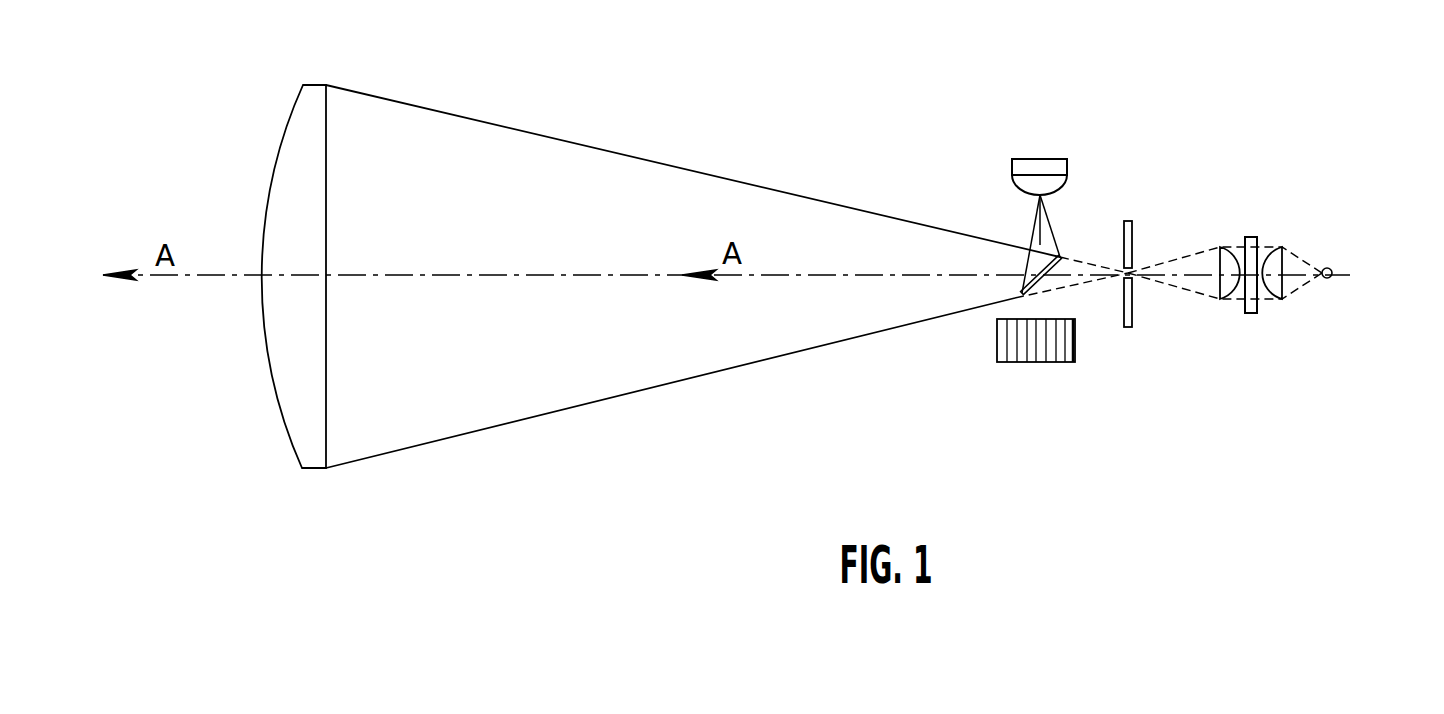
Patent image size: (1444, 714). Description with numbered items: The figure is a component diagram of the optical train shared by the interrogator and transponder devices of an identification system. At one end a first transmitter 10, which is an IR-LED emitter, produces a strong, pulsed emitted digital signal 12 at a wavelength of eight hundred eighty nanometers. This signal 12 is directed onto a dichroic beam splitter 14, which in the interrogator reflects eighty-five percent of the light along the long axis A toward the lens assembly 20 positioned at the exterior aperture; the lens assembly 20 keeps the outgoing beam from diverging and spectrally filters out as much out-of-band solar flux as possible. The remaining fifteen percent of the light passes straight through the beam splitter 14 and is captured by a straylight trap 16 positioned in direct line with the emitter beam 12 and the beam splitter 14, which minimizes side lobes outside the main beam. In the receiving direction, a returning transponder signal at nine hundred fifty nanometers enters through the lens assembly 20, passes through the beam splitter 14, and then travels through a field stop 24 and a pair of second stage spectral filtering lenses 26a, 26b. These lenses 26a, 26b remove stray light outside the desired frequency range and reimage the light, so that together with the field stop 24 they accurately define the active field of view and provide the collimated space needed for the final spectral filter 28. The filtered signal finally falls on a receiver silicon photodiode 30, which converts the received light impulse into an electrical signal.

The transmitter 10 is at (997, 147).
The emitted digital signal 12 is at (1047, 222).
The dichroic beam splitter 14 is at (1017, 296).
The straylight trap 16 is at (1035, 362).
The lens assembly 20 is at (234, 144).
The field stop 24 is at (1128, 327).
The spectral filtering lens 26a is at (1222, 300).
The spectral filtering lens 26b is at (1280, 300).
The final spectral filter 28 is at (1252, 237).
The receiver silicon photodiode 30 is at (1333, 268).